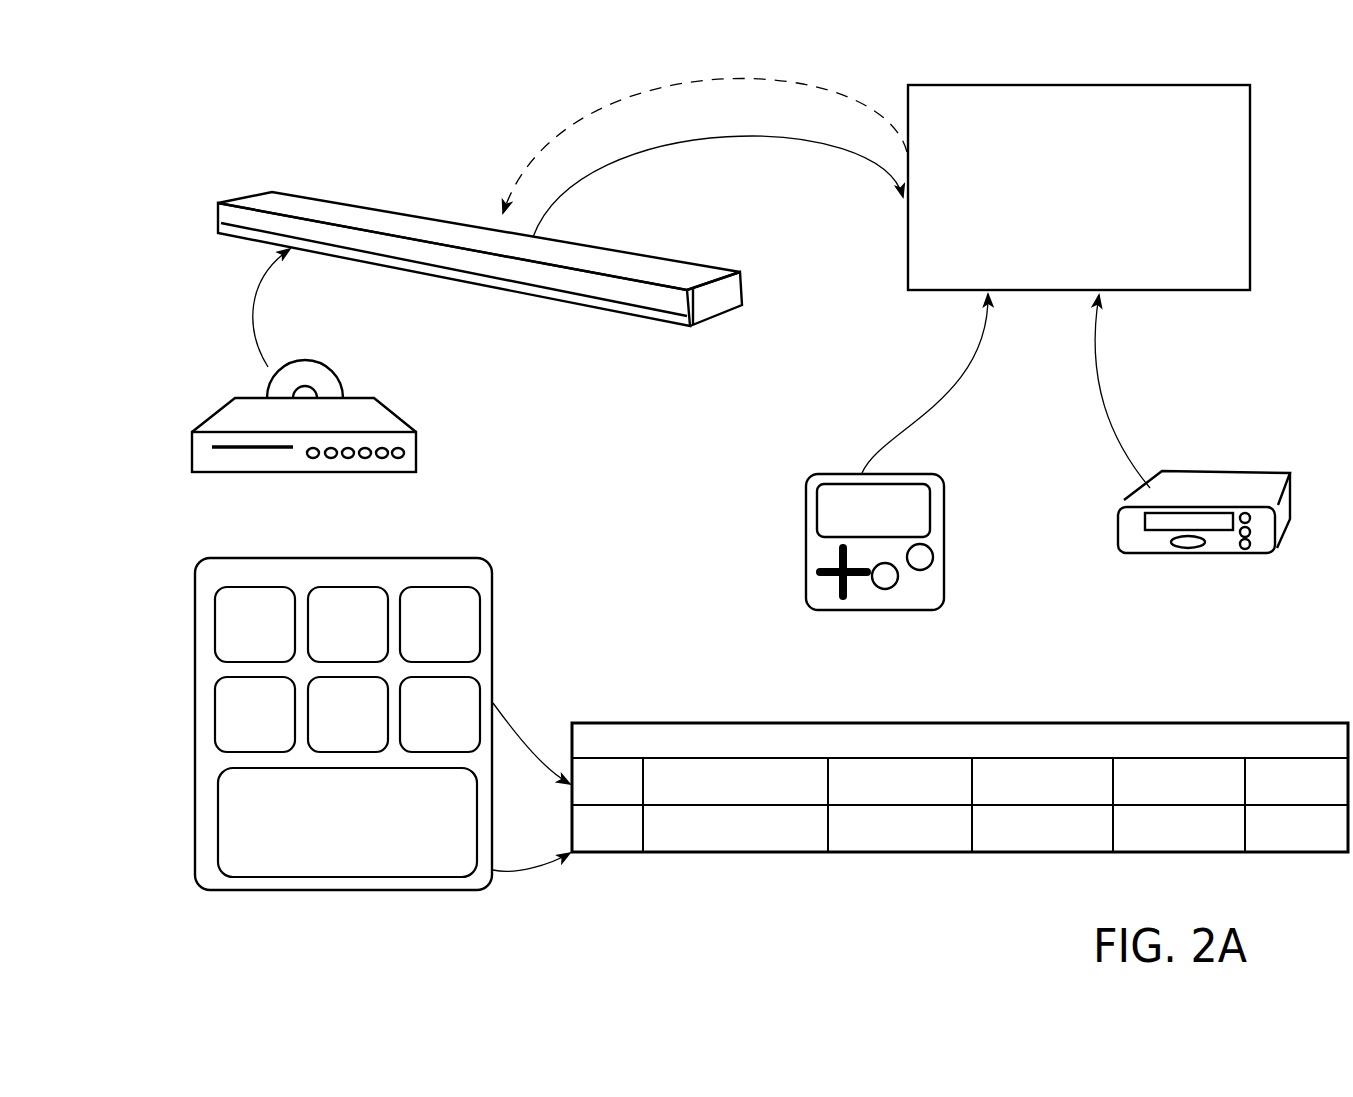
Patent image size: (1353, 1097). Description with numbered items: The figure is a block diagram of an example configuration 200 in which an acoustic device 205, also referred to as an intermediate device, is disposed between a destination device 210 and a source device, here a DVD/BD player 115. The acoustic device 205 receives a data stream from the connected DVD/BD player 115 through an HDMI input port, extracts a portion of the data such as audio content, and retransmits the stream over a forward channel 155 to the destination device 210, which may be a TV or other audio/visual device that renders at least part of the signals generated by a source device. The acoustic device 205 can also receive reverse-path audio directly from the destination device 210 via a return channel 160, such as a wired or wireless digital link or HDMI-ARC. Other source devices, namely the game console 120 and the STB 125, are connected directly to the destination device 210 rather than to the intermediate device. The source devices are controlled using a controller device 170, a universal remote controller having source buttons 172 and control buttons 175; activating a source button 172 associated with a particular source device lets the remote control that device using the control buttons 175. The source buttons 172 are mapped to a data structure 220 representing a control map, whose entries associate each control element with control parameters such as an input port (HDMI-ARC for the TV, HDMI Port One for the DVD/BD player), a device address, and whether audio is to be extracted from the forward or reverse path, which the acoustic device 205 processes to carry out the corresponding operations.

The configuration 200 is at (340, 167).
The acoustic device 205 is at (687, 257).
The destination device 210 is at (1100, 212).
The forward channel 155 is at (718, 186).
The return channel 160 is at (705, 125).
The DVD/BD player 115 is at (223, 405).
The game console 120 is at (912, 612).
The STB 125 is at (1257, 470).
The controller device 170 is at (309, 725).
The source button 172 is at (188, 568).
The control buttons 175 is at (377, 838).
The data structure 220 is at (810, 722).